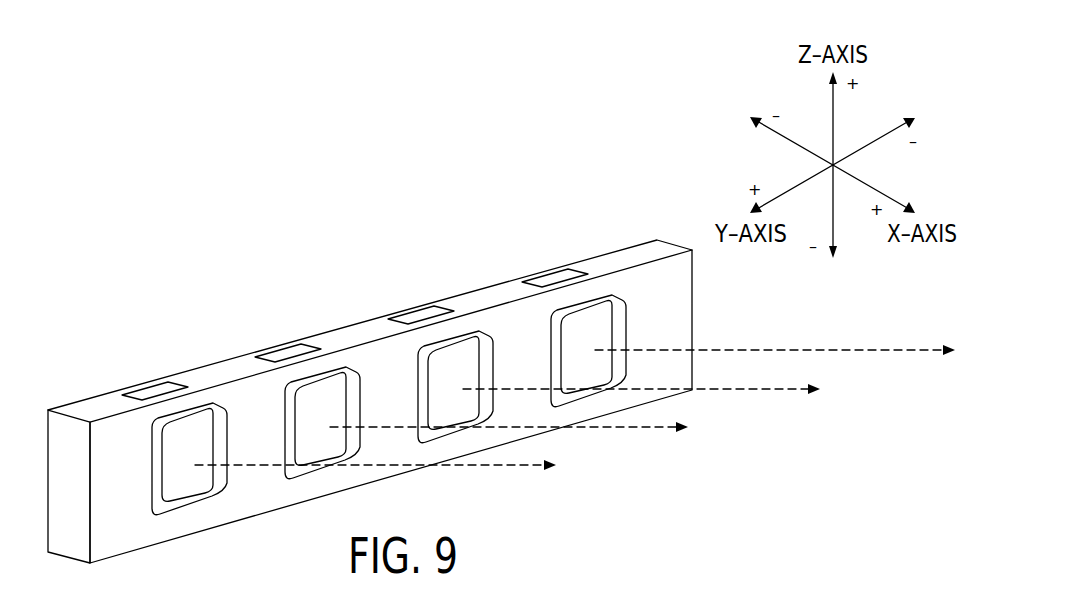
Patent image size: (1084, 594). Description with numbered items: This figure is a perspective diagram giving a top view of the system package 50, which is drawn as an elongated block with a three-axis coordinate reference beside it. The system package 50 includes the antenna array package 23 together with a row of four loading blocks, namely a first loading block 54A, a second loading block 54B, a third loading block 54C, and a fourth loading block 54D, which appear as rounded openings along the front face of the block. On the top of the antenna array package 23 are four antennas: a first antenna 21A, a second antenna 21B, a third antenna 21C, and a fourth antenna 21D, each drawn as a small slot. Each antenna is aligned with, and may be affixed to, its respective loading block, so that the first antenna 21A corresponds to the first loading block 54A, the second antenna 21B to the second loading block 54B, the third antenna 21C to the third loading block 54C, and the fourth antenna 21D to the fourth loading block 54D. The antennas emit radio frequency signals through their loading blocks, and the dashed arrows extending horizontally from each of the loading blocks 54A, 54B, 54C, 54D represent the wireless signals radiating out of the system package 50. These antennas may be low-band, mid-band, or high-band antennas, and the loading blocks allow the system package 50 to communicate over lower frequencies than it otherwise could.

The system package 50 is at (212, 255).
The antenna array package 23 is at (110, 400).
The first antenna 21A is at (139, 388).
The second antenna 21B is at (275, 350).
The third antenna 21C is at (407, 313).
The fourth antenna 21D is at (540, 275).
The first loading block 54A is at (214, 443).
The second loading block 54B is at (347, 405).
The third loading block 54C is at (482, 366).
The fourth loading block 54D is at (614, 330).